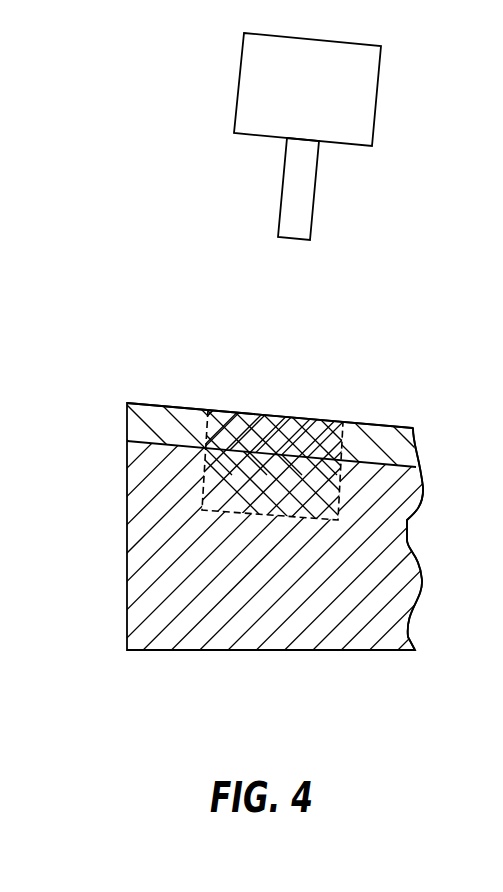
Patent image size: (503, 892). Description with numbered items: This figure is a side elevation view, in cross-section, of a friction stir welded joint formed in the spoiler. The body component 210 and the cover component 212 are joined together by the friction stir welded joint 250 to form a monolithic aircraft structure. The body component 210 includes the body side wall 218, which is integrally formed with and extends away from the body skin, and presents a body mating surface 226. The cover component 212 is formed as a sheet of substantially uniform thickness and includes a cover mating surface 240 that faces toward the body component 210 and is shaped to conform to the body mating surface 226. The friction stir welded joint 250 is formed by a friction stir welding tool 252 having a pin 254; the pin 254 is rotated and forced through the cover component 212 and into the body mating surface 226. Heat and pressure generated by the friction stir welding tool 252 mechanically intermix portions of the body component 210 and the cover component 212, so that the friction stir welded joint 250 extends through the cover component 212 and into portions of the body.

The body component 210 is at (334, 662).
The cover component 212 is at (397, 445).
The body side wall 218 is at (150, 619).
The body mating surface 226 is at (150, 440).
The cover mating surface 240 is at (410, 515).
The friction stir welded joint 250 is at (300, 418).
The friction stir welding tool 252 is at (392, 96).
The pin 254 is at (314, 207).